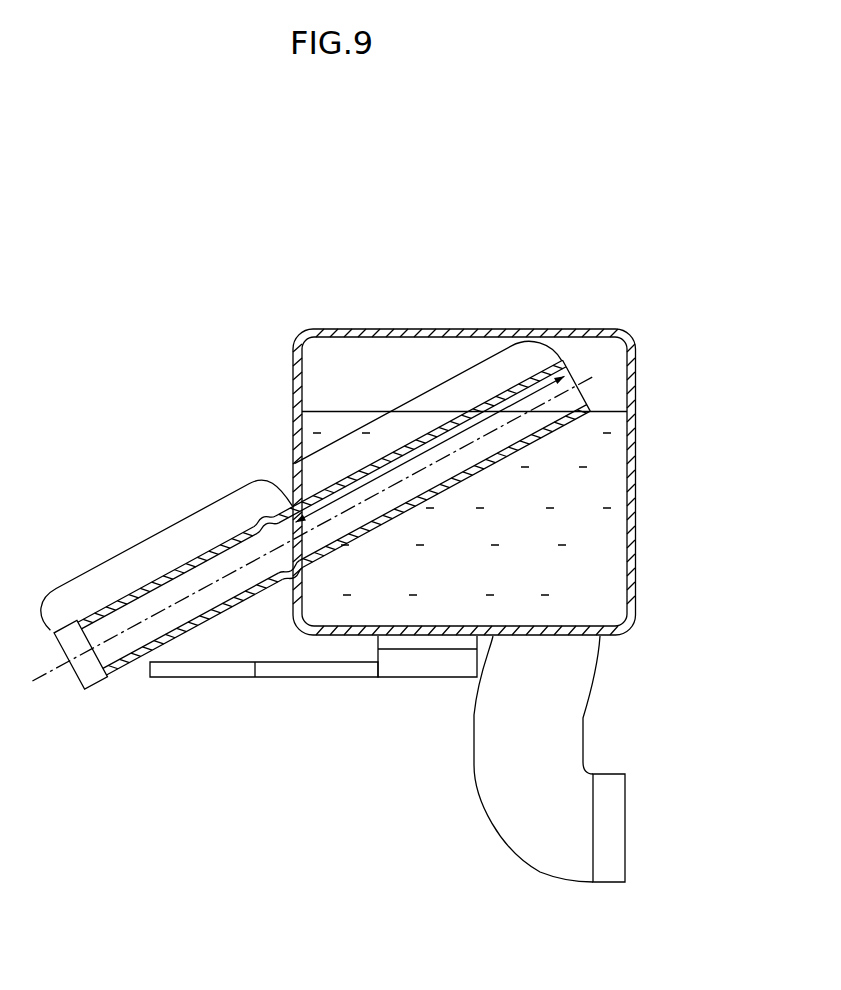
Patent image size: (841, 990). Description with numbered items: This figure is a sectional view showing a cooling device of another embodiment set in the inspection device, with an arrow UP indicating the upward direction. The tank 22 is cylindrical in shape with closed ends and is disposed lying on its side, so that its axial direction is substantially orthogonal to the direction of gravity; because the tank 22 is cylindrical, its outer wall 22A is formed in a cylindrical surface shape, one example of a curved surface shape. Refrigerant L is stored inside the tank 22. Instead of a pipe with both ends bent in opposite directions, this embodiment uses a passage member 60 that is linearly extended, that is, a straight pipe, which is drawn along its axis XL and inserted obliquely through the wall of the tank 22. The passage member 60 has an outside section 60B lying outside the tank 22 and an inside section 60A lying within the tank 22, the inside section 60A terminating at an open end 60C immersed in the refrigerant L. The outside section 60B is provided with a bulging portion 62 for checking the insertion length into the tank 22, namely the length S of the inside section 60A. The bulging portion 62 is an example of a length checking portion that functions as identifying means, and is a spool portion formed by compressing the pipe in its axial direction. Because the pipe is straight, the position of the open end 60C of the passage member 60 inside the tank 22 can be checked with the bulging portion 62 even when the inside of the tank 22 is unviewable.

The tank 22 is at (600, 322).
The outer wall 22A is at (639, 458).
The refrigerant L is at (611, 525).
The passage member 60 is at (253, 457).
The inside section 60A is at (427, 390).
The outside section 60B is at (165, 527).
The open end 60C is at (588, 403).
The bulging portion 62 is at (288, 580).
The length S is at (500, 400).
The axis of tube XL is at (38, 695).
The upward direction UP is at (169, 290).